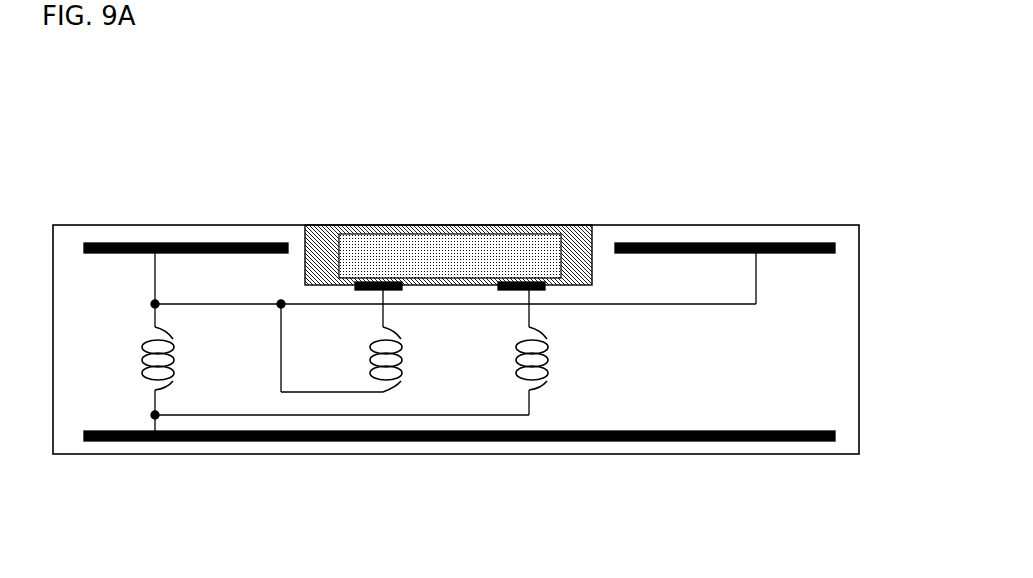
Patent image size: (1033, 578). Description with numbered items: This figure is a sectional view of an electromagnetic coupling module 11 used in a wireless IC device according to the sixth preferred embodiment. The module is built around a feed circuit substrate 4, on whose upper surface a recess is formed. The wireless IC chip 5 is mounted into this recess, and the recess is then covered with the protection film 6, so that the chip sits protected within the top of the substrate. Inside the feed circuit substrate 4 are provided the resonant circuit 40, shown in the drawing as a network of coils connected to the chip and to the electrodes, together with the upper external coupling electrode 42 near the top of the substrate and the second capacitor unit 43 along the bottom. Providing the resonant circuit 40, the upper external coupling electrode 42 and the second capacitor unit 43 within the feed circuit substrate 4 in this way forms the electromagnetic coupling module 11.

The electromagnetic coupling module 11 is at (868, 183).
The feed circuit substrate 4 is at (843, 337).
The wireless IC chip 5 is at (452, 240).
The protection film 6 is at (573, 233).
The resonant circuit 40 is at (583, 352).
The upper external coupling electrode 42 is at (717, 243).
The second capacitor unit 43 is at (459, 441).